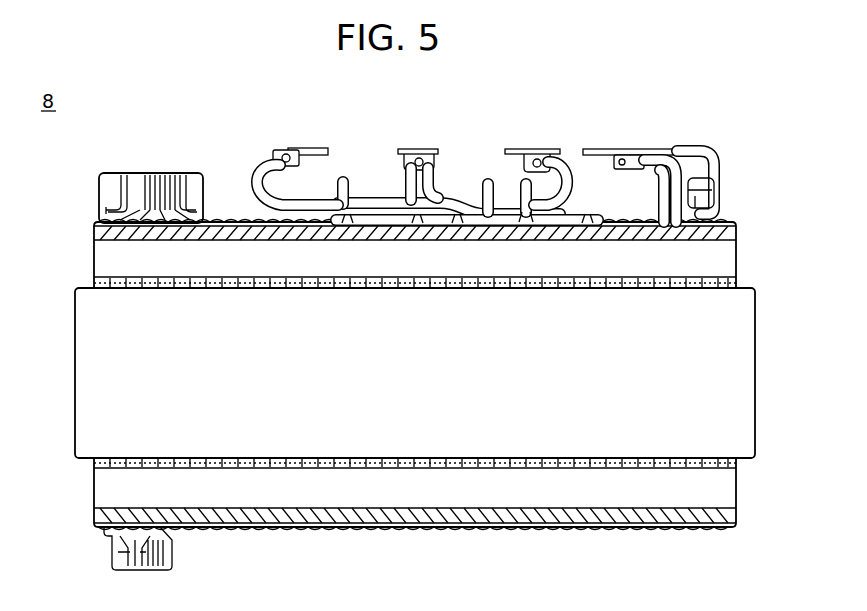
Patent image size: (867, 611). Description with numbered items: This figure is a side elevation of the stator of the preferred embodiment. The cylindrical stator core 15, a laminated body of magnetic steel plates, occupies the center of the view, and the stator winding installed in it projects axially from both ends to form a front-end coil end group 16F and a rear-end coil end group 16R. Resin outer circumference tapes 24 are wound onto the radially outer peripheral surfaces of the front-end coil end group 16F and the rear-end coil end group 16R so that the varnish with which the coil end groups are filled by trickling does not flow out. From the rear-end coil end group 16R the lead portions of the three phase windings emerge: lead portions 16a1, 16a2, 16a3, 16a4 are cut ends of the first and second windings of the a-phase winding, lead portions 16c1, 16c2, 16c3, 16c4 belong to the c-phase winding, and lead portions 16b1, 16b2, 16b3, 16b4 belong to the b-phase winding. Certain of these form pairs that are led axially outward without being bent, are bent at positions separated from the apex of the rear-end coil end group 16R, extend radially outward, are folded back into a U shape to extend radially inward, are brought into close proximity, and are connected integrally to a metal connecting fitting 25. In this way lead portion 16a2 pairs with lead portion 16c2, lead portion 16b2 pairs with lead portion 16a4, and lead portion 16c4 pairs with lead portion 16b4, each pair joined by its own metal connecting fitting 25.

The stator core 15 is at (90, 402).
The resin outer circumference tape 24 is at (106, 257).
The metal connecting fitting 25 is at (292, 148).
The rear-end coil end group 16R is at (98, 224).
The front-end coil end group 16F is at (96, 518).
The lead portion 16a1 is at (516, 150).
The lead portion 16a2 is at (580, 170).
The lead portion 16a3 is at (568, 204).
The lead portion 16a4 is at (413, 150).
The lead portion 16b1 is at (366, 194).
The lead portion 16b2 is at (434, 150).
The lead portion 16b3 is at (343, 178).
The lead portion 16b4 is at (263, 178).
The lead portion 16c1 is at (486, 180).
The lead portion 16c2 is at (550, 153).
The lead portion 16c3 is at (448, 196).
The lead portion 16c4 is at (264, 158).